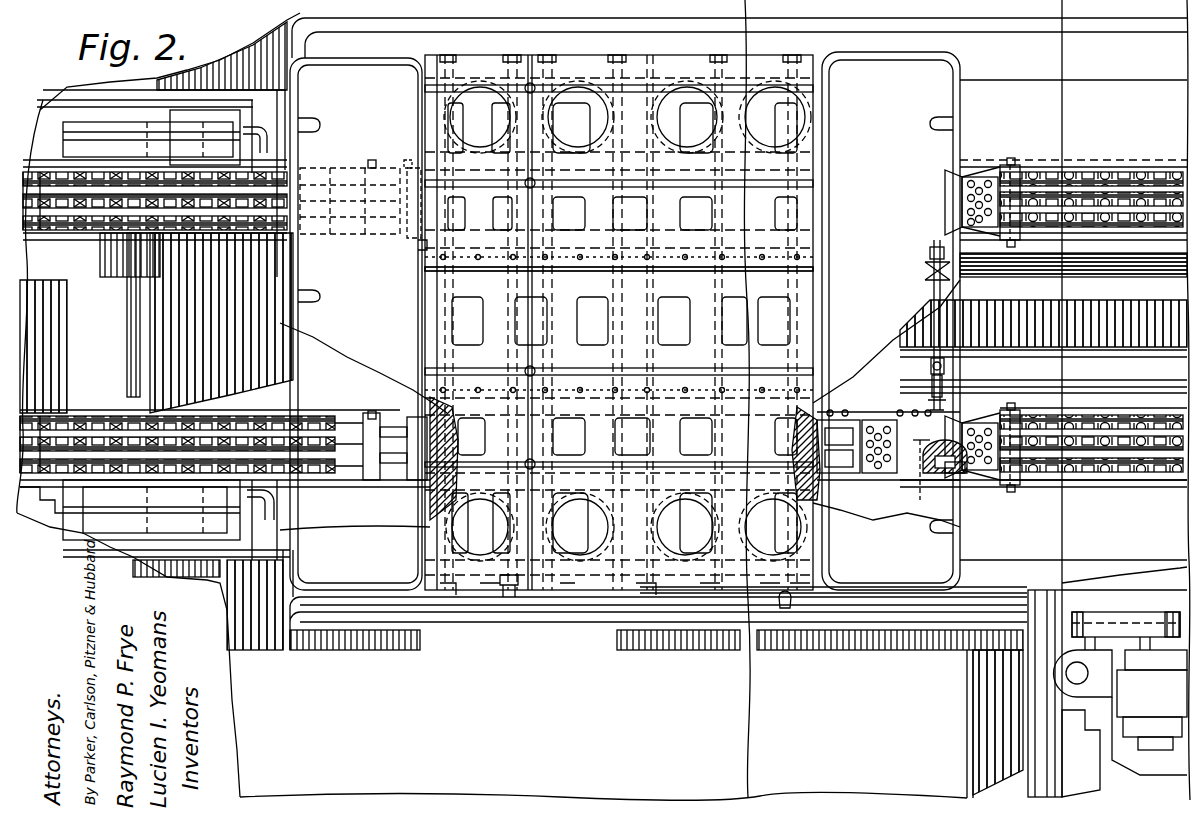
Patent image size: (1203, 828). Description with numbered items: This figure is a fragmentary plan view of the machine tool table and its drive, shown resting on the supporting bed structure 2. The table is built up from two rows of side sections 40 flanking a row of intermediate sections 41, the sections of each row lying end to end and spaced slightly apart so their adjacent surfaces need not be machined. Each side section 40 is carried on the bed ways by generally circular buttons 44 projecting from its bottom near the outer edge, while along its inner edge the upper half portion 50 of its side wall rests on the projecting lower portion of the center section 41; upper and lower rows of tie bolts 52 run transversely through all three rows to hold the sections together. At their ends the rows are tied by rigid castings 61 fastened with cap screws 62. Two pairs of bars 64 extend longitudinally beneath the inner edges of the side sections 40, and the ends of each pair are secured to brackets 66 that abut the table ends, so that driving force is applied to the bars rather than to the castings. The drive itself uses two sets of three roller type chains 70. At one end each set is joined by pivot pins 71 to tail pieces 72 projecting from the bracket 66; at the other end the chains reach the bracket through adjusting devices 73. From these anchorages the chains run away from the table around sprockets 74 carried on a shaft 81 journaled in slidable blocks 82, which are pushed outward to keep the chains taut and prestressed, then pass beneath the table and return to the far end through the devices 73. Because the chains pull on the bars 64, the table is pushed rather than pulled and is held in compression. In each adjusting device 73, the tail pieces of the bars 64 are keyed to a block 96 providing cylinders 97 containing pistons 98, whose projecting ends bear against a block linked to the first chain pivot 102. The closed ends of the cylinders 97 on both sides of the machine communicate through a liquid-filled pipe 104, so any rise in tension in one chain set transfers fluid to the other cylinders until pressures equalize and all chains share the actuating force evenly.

The supporting bed structure 2 is at (263, 56).
The side sections 40 is at (567, 58).
The intermediate sections 41 is at (790, 295).
The circular buttons 44 is at (567, 83).
The upper half portion of the side wall 50 is at (807, 258).
The tie bolts 52 is at (507, 582).
The rigid castings 61 is at (945, 110).
The cap screws 62 is at (418, 262).
The bars 64 is at (403, 163).
The brackets 66 is at (418, 425).
The roller type chains 70 is at (1108, 175).
The pivot pins 71 is at (372, 162).
The tail pieces 72 is at (385, 472).
The adjusting devices 73 is at (940, 183).
The sprockets 74 is at (90, 226).
The shaft 81 is at (140, 320).
The blocks 82 is at (140, 525).
The block 96 is at (940, 447).
The cylinders 97 is at (955, 472).
The pistons 98 is at (920, 472).
The first chain pivot 102 is at (1013, 165).
The pipe 104 is at (945, 333).